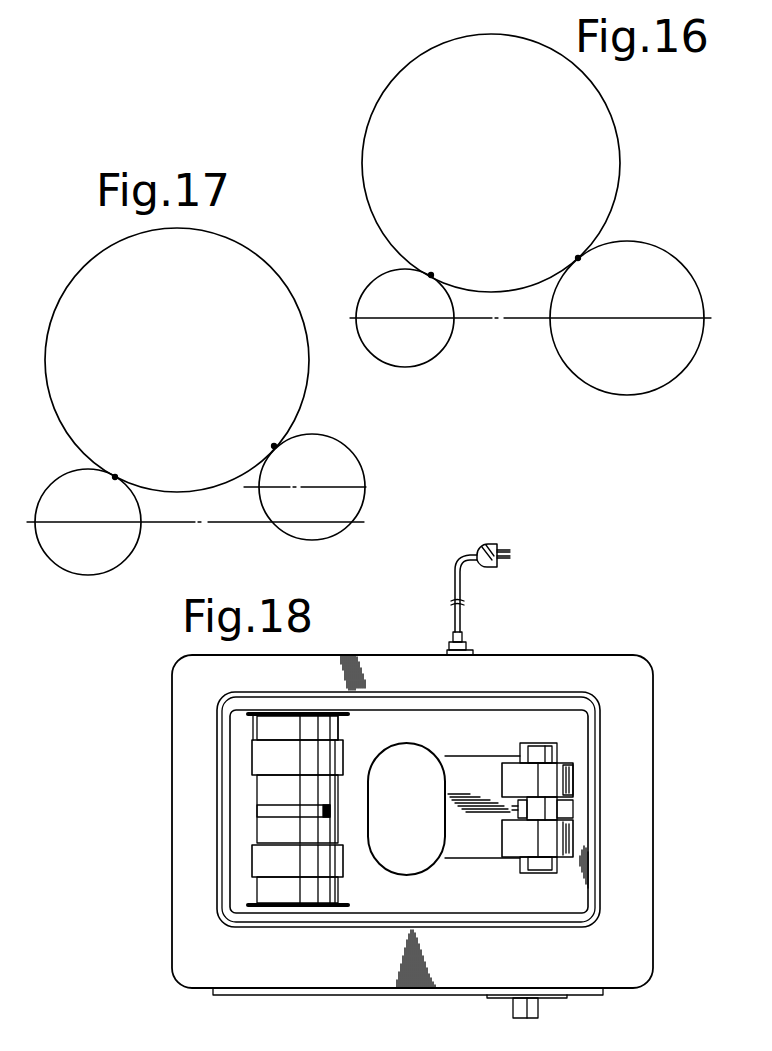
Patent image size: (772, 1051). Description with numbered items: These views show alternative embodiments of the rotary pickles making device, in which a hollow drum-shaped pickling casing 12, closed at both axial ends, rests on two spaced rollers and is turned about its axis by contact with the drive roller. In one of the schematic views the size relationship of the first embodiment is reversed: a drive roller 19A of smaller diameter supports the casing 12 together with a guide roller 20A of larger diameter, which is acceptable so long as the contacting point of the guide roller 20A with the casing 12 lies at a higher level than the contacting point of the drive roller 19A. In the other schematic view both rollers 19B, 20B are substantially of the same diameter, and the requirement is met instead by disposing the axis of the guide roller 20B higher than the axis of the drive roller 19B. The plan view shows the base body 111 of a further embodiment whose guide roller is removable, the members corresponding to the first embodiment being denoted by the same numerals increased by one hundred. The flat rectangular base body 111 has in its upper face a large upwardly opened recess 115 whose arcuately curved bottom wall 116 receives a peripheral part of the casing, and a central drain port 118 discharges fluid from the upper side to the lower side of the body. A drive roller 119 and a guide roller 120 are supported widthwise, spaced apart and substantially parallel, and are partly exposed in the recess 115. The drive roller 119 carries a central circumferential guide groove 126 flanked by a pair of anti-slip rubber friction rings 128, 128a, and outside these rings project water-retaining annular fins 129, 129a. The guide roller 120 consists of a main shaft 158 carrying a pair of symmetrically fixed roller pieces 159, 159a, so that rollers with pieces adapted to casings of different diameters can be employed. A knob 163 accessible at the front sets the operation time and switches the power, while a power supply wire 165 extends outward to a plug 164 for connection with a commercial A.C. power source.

In FIG. 16, the pickling casing 12 is at (608, 125).
In FIG. 17, the pickling casing 12 is at (262, 258).
In FIG. 16, the drive roller 19A is at (433, 361).
In FIG. 16, the guide roller 20A is at (598, 395).
In FIG. 17, the drive roller 19B is at (125, 553).
In FIG. 17, the guide roller 20B is at (362, 494).
In FIG. 18, the base body 111 is at (567, 652).
In FIG. 18, the recess 115 is at (448, 738).
In FIG. 18, the bottom wall 116 is at (542, 722).
In FIG. 18, the drain port 118 is at (393, 757).
In FIG. 18, the drive roller 119 is at (257, 788).
In FIG. 18, the guide roller 120 is at (573, 790).
In FIG. 18, the guide groove 126 is at (263, 812).
In FIG. 18, the friction ring 128 is at (262, 863).
In FIG. 18, the friction ring 128a is at (263, 755).
In FIG. 18, the water-retaining annular fin 129 is at (248, 905).
In FIG. 18, the water-retaining annular fin 129a is at (248, 714).
In FIG. 18, the main shaft 158 is at (557, 752).
In FIG. 18, the roller piece 159 is at (563, 840).
In FIG. 18, the roller piece 159a is at (570, 777).
In FIG. 18, the knob 163 is at (532, 1008).
In FIG. 18, the plug 164 is at (485, 565).
In FIG. 18, the power supply wire 165 is at (463, 618).